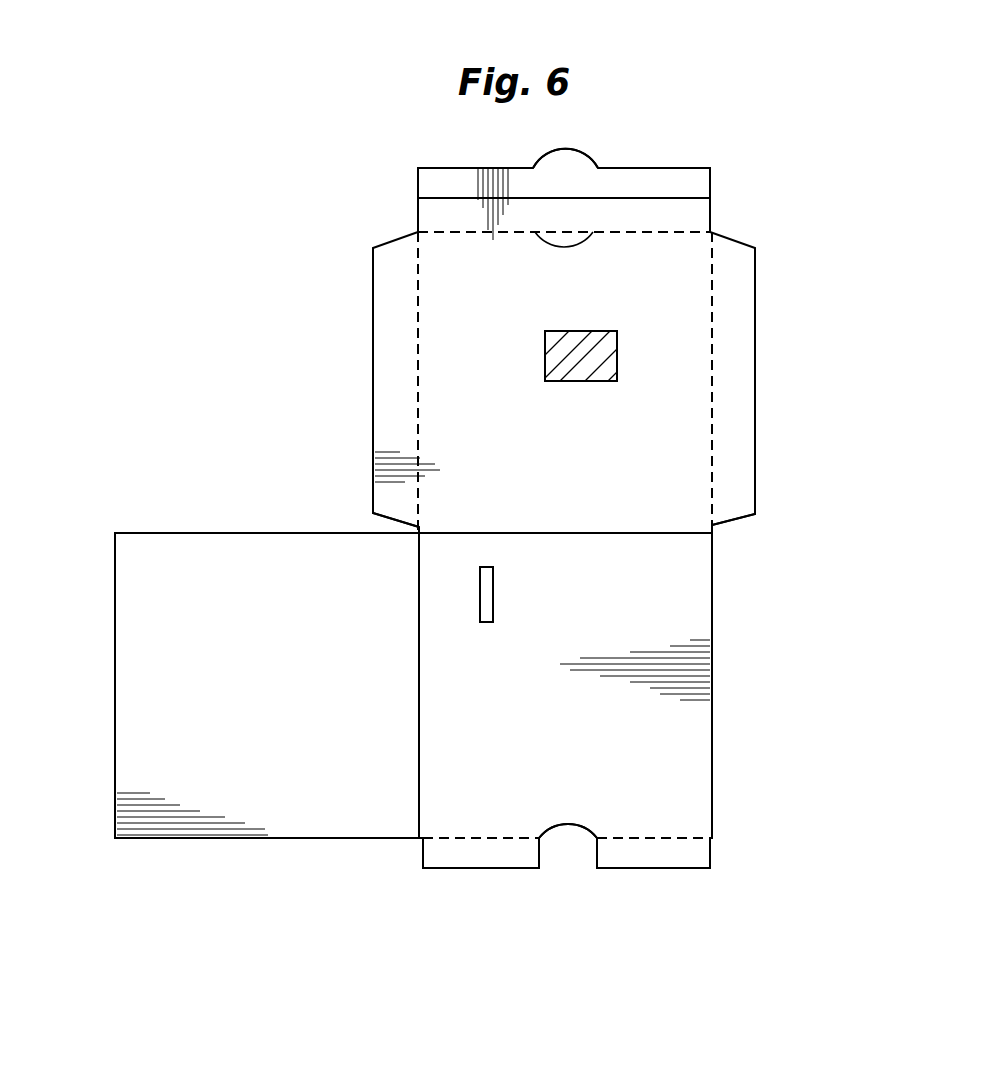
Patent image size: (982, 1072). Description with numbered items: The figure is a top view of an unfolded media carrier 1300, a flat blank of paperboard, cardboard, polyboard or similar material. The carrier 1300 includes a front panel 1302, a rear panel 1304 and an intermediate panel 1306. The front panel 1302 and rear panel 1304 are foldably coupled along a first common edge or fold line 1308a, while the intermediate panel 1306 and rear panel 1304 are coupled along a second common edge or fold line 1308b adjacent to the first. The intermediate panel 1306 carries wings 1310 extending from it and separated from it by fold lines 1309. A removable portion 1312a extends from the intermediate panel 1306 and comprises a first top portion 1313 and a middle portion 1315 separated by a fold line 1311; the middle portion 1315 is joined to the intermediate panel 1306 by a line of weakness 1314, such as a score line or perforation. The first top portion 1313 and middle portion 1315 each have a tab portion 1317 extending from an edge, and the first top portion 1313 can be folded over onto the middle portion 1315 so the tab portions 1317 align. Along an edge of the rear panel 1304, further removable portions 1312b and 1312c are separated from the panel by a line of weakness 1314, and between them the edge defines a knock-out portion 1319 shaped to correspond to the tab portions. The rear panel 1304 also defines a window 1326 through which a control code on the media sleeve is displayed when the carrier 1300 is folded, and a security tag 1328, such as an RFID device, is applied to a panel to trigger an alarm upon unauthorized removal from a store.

The carrier 1300 is at (220, 932).
The front panel 1302 is at (166, 548).
The rear panel 1304 is at (695, 718).
The intermediate panel 1306 is at (693, 445).
The first fold line 1308a is at (418, 758).
The second fold line 1308b is at (700, 540).
The fold lines 1309 is at (417, 310).
The wings 1310 is at (385, 405).
The fold line 1311 is at (598, 198).
The removable portion 1312a is at (696, 181).
The removable portion 1312b is at (698, 855).
The removable portion 1312c is at (507, 862).
The first top portion 1313 is at (440, 180).
The line of weakness 1314 is at (438, 229).
The middle portion 1315 is at (698, 218).
The tab portion 1317 is at (560, 158).
The knock-out portion 1319 is at (567, 850).
The window 1326 is at (495, 603).
The security tag 1328 is at (615, 352).